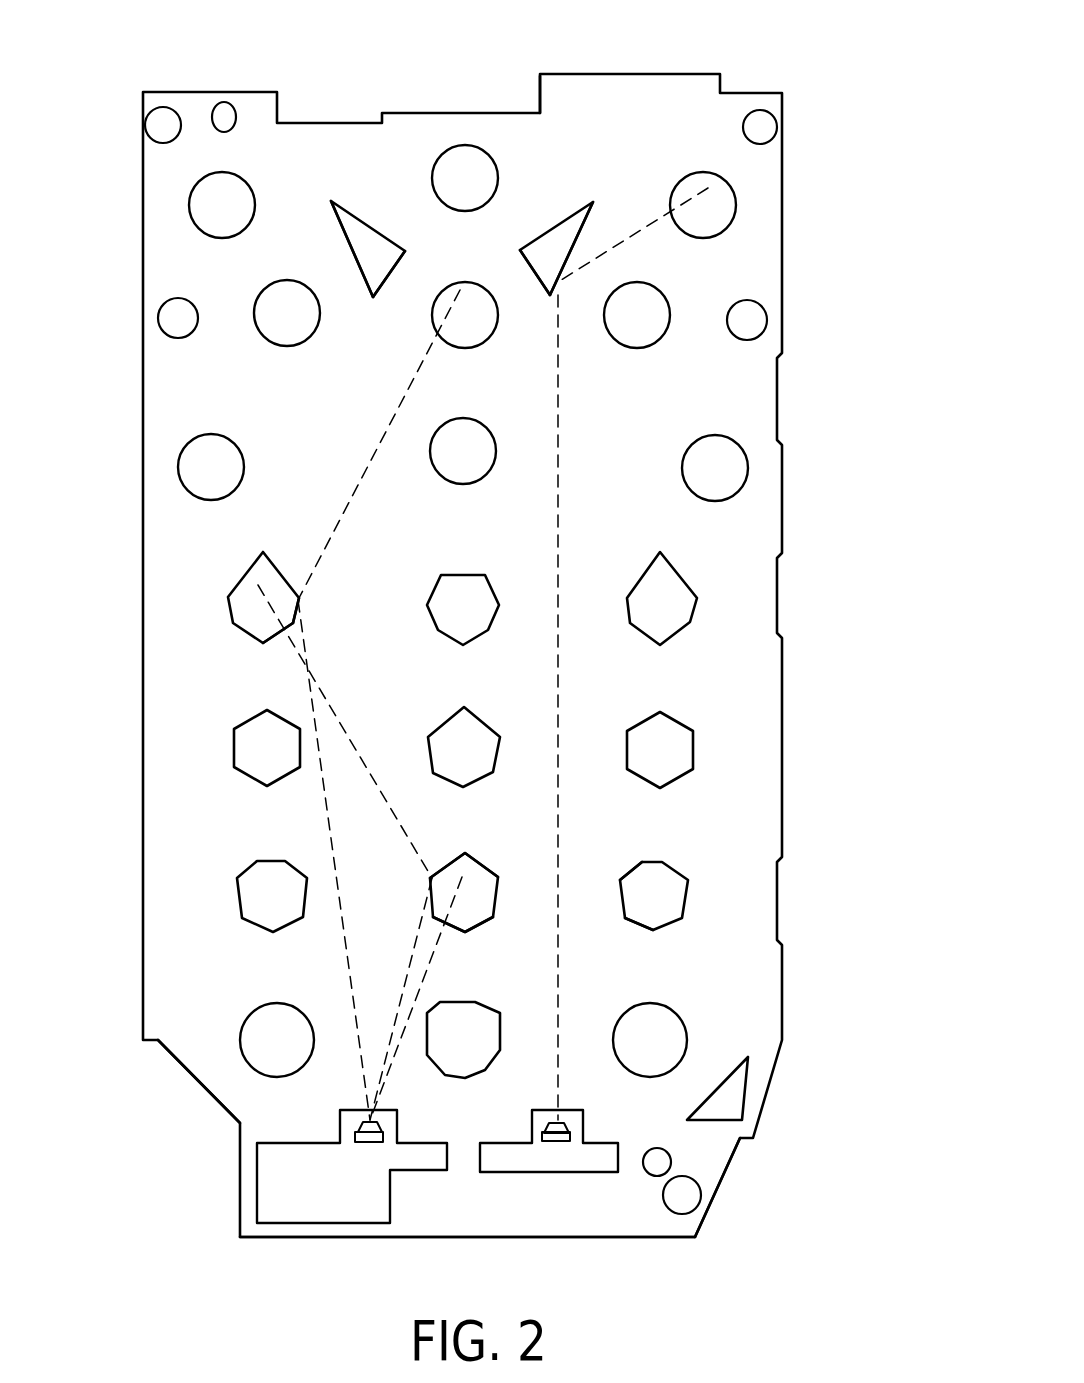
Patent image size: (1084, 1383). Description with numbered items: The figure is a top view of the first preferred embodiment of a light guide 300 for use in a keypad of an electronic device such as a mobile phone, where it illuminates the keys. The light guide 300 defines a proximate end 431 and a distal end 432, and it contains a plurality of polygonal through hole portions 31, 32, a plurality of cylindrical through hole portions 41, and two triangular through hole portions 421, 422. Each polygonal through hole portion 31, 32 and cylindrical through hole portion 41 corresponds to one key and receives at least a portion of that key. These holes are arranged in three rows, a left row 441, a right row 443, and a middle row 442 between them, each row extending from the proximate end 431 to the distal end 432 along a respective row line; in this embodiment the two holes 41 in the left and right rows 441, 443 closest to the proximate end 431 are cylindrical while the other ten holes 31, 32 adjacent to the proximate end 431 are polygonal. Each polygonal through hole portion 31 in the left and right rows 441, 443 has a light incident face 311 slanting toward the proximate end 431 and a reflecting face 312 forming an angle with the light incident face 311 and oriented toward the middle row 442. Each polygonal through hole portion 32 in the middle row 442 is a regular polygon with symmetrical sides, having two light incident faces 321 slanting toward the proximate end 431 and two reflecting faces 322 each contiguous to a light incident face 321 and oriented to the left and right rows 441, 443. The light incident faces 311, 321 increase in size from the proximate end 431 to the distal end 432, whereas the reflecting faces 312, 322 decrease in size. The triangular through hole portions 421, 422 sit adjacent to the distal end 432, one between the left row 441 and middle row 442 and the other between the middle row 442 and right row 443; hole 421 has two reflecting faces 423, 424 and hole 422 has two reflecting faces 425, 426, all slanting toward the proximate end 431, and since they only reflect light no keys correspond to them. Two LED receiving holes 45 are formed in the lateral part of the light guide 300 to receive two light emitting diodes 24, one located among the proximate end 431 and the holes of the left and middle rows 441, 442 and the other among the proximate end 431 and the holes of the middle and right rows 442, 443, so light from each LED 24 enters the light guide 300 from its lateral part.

The light guide 300 is at (805, 1138).
The cylindrical through hole portions 41 is at (207, 203).
The polygonal through hole portions 31 is at (262, 568).
The light incident face 311 is at (278, 637).
The reflecting face 312 is at (300, 598).
The polygonal through hole portions 32 is at (462, 630).
The light incident faces 321 is at (438, 925).
The reflecting faces 322 is at (417, 873).
The triangular through hole portion 421 is at (332, 202).
The triangular through hole portion 422 is at (593, 200).
The reflecting face 423 is at (347, 253).
The reflecting face 424 is at (393, 273).
The reflecting face 425 is at (525, 273).
The reflecting face 426 is at (588, 230).
The proximate end 431 is at (683, 1213).
The distal end 432 is at (695, 83).
The left row 441 is at (255, 1096).
The middle row 442 is at (459, 1098).
The right row 443 is at (636, 1096).
The light emitting diodes 24 is at (373, 1140).
The LED receiving holes 45 is at (350, 1128).